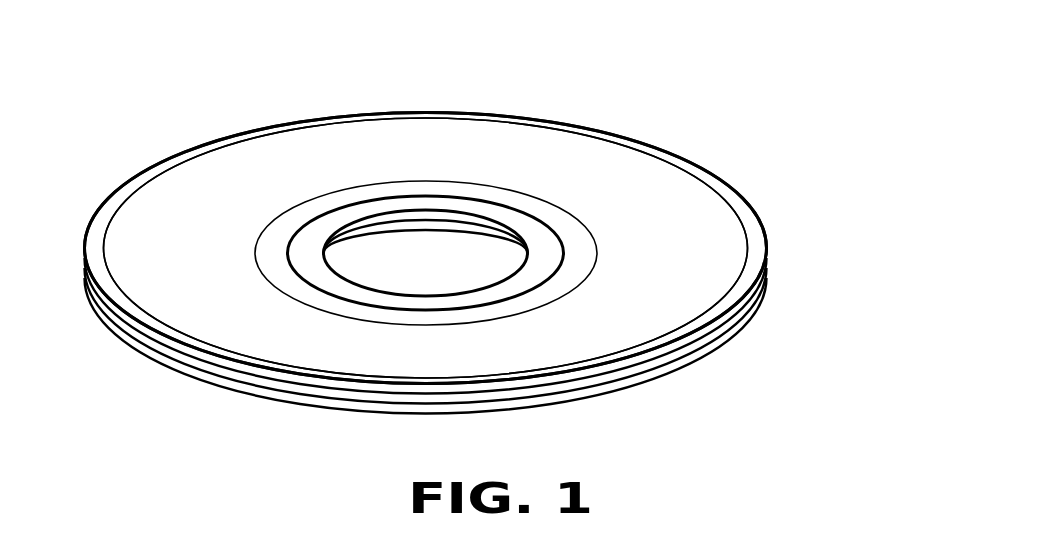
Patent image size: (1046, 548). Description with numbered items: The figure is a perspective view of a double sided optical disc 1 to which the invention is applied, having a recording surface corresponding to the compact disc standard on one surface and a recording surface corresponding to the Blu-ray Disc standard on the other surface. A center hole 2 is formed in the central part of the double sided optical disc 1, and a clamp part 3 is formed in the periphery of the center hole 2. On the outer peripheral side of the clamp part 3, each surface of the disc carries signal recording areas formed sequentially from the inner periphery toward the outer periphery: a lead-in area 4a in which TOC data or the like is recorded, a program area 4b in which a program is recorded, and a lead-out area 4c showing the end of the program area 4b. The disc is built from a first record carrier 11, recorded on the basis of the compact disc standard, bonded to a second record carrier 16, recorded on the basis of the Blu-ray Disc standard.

The double sided optical disc 1 is at (318, 68).
The center hole 2 is at (426, 223).
The clamp part 3 is at (480, 210).
The lead-in area 4a is at (547, 217).
The program area 4b is at (617, 193).
The lead-out area 4c is at (708, 178).
The first record carrier 11 is at (747, 215).
The second record carrier 16 is at (757, 308).